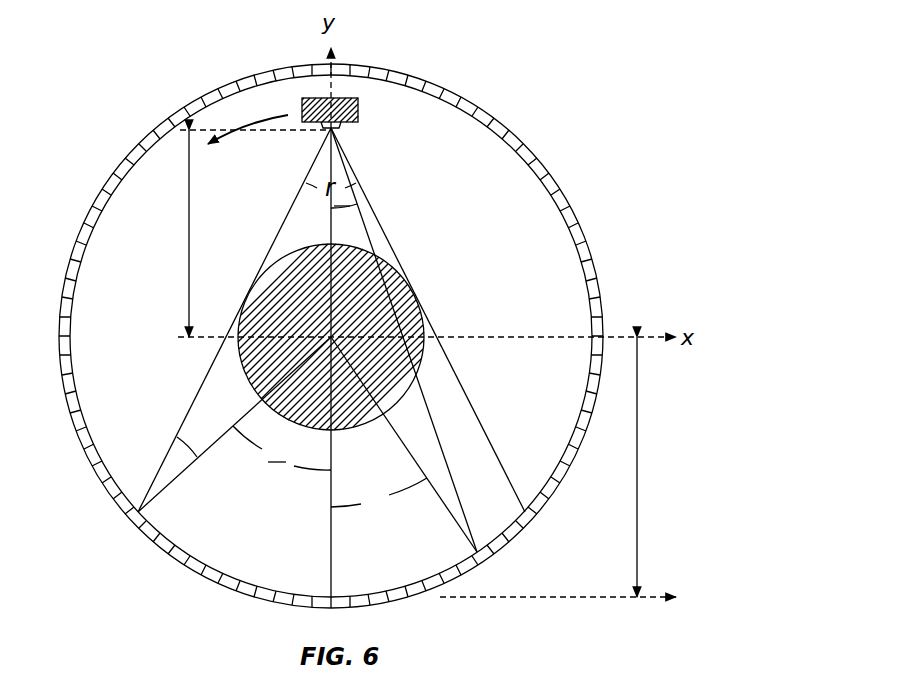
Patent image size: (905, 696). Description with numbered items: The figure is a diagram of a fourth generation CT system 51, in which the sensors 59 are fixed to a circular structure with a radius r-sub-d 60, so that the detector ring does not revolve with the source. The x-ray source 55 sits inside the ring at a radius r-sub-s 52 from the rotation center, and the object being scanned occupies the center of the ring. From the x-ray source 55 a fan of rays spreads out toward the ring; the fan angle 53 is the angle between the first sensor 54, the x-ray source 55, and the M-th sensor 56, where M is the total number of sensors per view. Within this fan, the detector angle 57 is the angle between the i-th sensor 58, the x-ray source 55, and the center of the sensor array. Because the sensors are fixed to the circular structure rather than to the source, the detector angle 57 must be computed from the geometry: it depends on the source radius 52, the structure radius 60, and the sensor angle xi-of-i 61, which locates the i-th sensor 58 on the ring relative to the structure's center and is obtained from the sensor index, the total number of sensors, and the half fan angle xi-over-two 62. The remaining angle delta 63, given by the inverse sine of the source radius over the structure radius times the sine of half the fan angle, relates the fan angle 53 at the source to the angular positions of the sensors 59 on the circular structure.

The fourth generation CT system 51 is at (450, 93).
The radius of the x-ray source 52 is at (171, 221).
The fan angle 53 is at (318, 179).
The first sensor 54 is at (556, 537).
The x-ray source 55 is at (350, 98).
The M-th sensor 56 is at (104, 549).
The detector angle 57 is at (360, 224).
The i-th sensor 58 is at (493, 588).
The sensors 59 is at (505, 133).
The radius of the circular structure 60 is at (652, 453).
The angle ξ(i) 61 is at (381, 529).
The half fan angle ξ/2 62 is at (262, 474).
The angle δ 63 is at (182, 429).